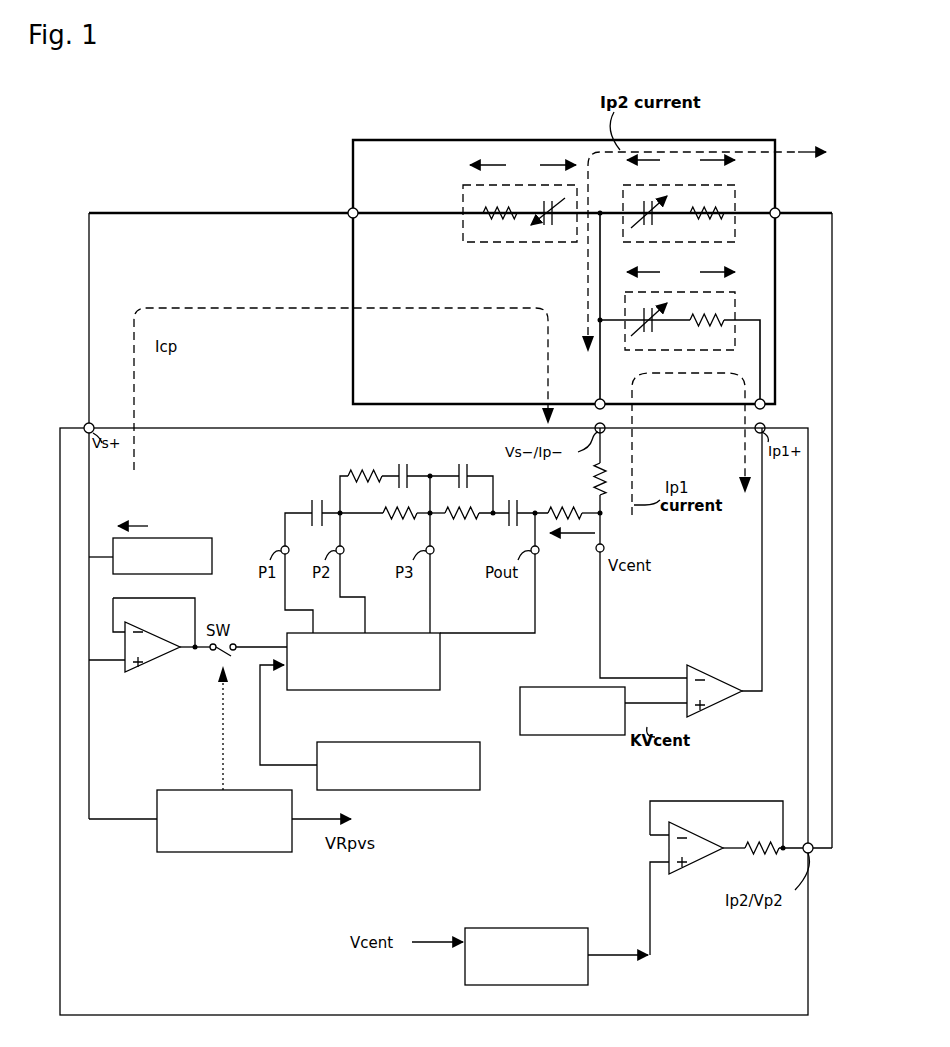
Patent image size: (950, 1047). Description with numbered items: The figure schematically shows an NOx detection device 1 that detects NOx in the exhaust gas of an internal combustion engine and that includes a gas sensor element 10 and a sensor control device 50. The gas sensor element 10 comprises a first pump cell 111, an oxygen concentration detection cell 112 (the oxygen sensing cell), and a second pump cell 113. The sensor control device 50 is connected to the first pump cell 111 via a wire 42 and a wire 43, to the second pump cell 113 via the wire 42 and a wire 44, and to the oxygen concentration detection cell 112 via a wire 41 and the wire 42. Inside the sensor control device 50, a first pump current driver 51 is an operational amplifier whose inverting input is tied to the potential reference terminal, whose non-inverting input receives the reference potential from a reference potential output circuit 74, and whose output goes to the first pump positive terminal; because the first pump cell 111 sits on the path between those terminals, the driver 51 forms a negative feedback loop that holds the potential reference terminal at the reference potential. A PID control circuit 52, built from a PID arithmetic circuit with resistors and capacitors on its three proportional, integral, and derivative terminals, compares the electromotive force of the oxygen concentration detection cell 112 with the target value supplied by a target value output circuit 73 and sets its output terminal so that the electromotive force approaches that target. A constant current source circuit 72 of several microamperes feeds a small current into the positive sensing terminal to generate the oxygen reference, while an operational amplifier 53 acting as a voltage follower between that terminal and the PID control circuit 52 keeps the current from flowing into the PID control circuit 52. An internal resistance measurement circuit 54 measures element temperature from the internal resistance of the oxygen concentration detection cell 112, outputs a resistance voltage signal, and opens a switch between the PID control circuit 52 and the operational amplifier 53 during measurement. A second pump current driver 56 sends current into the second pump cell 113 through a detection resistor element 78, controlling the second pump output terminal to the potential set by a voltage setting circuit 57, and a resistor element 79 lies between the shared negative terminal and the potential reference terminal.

The NOx detection device 1 is at (243, 128).
The gas sensor element 10 is at (352, 172).
The wire 41 is at (89, 280).
The wire 42 is at (598, 406).
The wire 43 is at (766, 405).
The wire 44 is at (832, 287).
The sensor control device 50 is at (60, 428).
The Ip1 driver 51 is at (713, 668).
The PID control circuit 52 is at (363, 661).
The operational amplifier 53 is at (148, 667).
The Rpvs measurement circuit 54 is at (220, 821).
The Ip2 driver 56 is at (700, 862).
The Vp2 setting circuit 57 is at (530, 956).
The constant current source circuit 72 is at (150, 550).
The Vs control target value output circuit 73 is at (370, 727).
The reference potential output circuit 74 is at (603, 711).
The detection resistor element 78 is at (758, 844).
The resistor element 79 is at (598, 483).
The first pump cell 111 is at (736, 296).
The oxygen concentration detection cell 112 is at (463, 205).
The second pump cell 113 is at (736, 201).